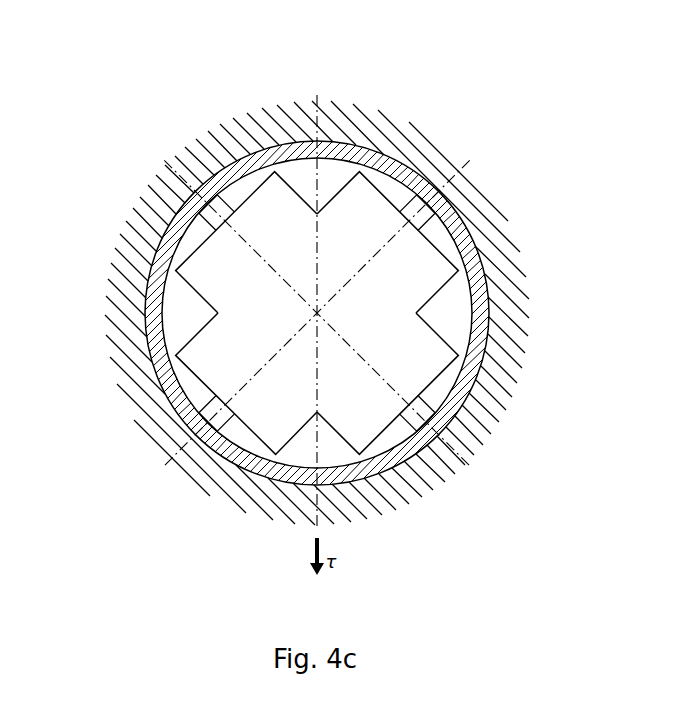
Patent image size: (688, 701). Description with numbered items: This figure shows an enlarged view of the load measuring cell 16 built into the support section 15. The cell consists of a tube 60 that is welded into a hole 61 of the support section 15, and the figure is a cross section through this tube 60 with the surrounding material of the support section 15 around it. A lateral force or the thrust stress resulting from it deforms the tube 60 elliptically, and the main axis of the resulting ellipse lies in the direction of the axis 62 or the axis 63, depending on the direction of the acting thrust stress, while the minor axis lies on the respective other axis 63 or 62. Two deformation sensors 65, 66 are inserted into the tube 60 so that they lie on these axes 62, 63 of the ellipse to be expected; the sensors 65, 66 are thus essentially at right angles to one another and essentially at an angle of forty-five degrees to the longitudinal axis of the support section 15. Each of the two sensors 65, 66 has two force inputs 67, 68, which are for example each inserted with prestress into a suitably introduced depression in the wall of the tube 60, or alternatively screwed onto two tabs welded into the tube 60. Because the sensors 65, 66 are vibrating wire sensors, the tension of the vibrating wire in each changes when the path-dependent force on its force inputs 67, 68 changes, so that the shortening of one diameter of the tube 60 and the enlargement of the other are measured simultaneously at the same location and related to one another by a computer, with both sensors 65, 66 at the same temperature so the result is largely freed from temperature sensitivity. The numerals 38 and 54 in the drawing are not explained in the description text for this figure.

The support section 15 is at (248, 490).
The load measuring cell 16 is at (394, 157).
The pole piece 38 is at (421, 206).
The longitudinal axis 54 is at (317, 124).
The tube 60 is at (468, 330).
The hole 61 is at (483, 240).
The axis 62 is at (252, 353).
The axis 63 is at (286, 281).
The deformation sensor 65 is at (421, 367).
The deformation sensor 66 is at (351, 208).
The force input 67 is at (214, 412).
The force input 68 is at (213, 203).